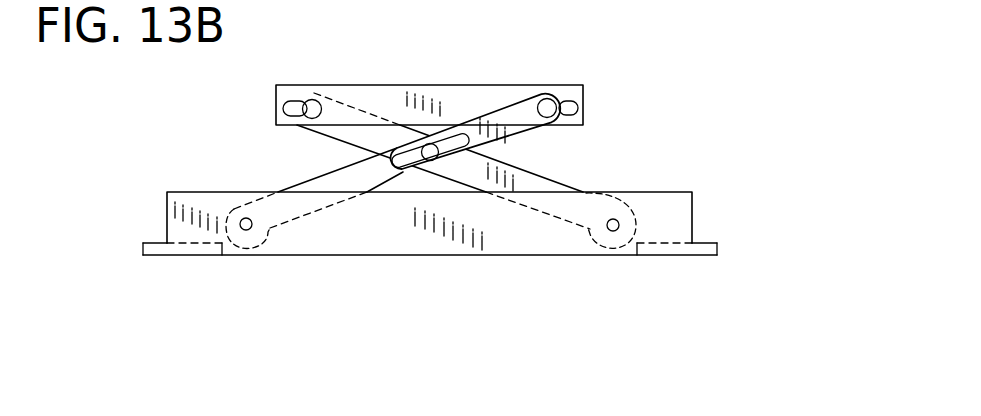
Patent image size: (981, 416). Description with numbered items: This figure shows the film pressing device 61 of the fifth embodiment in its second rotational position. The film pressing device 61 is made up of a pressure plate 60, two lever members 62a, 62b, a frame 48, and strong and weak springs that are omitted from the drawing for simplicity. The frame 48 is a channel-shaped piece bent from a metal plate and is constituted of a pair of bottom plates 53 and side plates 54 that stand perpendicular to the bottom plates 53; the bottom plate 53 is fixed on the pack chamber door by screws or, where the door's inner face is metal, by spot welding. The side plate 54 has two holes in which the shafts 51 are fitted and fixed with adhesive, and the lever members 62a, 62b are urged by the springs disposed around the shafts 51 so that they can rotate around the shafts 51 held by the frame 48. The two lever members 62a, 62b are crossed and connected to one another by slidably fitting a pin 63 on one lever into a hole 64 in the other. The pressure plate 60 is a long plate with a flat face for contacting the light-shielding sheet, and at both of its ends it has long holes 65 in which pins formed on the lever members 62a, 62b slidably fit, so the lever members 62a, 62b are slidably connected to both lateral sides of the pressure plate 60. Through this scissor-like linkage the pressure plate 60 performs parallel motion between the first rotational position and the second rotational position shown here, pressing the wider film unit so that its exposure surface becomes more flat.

The frame 48 is at (460, 276).
The shaft 51 is at (246, 218).
The bottom plate 53 is at (153, 243).
The side plate 54 is at (387, 237).
The pressure plate 60 is at (460, 64).
The film pressing device 61 is at (449, 130).
The lever member 62a is at (546, 158).
The lever member 62b is at (290, 162).
The pin 63 is at (419, 163).
The hole 64 is at (453, 153).
The long hole 65 is at (293, 102).